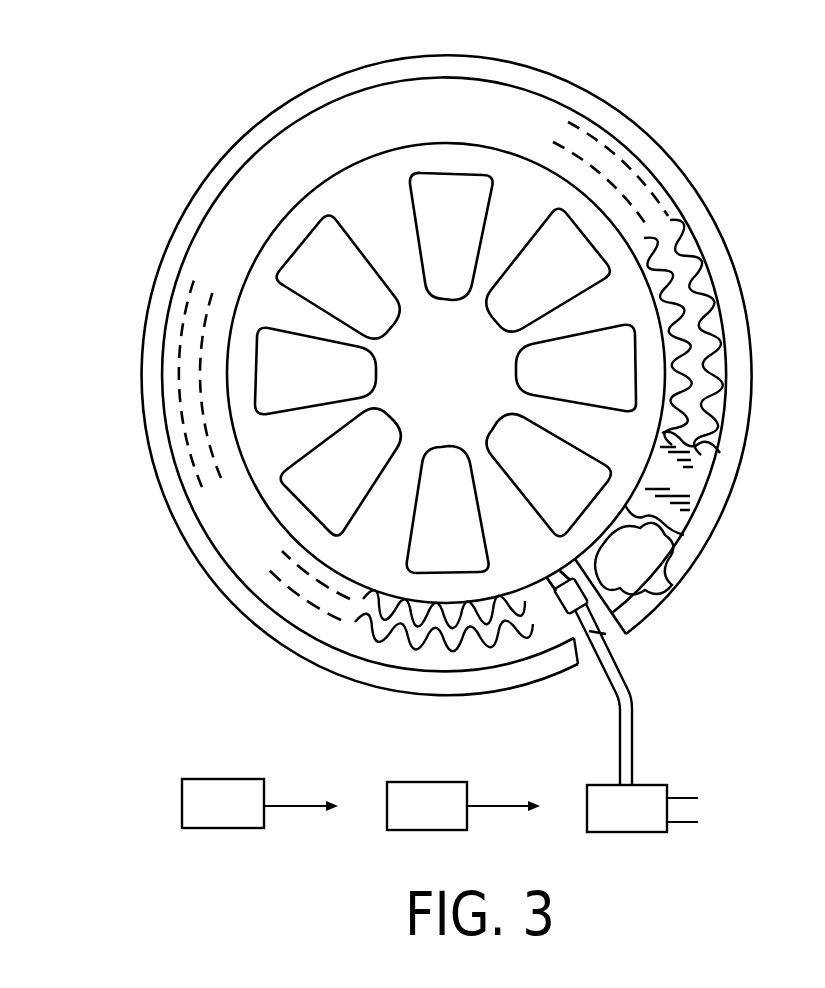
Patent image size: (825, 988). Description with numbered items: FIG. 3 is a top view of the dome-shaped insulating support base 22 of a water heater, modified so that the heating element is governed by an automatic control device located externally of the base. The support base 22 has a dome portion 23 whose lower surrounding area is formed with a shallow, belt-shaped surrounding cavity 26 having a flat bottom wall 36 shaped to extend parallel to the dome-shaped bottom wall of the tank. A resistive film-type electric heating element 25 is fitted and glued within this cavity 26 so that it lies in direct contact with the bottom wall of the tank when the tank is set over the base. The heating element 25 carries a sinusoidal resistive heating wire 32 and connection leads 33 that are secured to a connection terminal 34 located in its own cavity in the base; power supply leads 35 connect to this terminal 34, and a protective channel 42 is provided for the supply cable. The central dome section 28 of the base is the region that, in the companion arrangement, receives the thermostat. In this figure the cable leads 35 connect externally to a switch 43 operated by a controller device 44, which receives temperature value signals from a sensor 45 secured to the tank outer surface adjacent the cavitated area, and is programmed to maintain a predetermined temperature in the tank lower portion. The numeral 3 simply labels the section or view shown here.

The insulating support base 22 is at (730, 122).
The dome portion 23 is at (578, 131).
The film-type electric heating element 25 is at (710, 367).
The surrounding cavity 26 is at (455, 105).
The dome section 28 is at (462, 380).
The resistive heating wire 32 is at (690, 255).
The connection leads 33 is at (566, 612).
The connection terminal 34 is at (572, 612).
The power supply leads 35 is at (636, 716).
The flat bottom wall 36 is at (528, 100).
The protective channel 42 is at (618, 637).
The switch 43 is at (655, 785).
The controller device 44 is at (420, 782).
The sensor 45 is at (217, 779).
The section line 3 is at (553, 598).